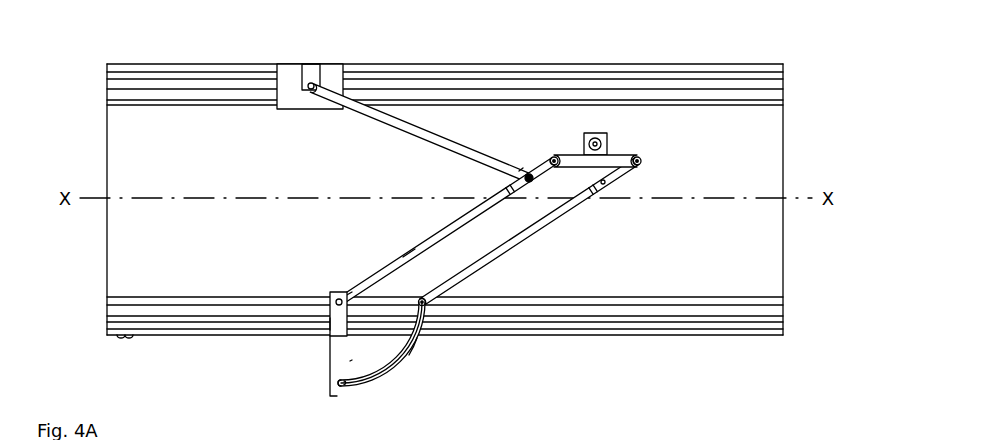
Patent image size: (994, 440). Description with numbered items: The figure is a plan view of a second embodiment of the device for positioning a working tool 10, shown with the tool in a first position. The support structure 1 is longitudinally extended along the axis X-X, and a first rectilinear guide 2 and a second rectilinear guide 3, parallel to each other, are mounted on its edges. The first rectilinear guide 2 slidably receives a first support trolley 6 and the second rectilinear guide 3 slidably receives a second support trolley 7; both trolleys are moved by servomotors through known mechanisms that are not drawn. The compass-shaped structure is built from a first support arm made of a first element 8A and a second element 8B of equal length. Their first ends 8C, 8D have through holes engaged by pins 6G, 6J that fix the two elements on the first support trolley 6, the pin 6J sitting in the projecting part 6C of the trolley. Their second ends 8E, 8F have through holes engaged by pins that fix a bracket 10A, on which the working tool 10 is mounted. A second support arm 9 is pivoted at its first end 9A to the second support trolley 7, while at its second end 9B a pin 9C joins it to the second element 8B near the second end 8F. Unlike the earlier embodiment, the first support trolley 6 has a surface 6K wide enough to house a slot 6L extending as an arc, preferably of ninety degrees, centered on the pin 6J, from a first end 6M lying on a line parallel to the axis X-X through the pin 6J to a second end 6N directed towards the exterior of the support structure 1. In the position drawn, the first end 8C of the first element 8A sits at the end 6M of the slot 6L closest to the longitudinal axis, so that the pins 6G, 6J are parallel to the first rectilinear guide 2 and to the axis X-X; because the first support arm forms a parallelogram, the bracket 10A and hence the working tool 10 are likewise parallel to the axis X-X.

The support structure 1 is at (768, 268).
The first rectilinear guide 2 is at (747, 315).
The second rectilinear guide 3 is at (765, 82).
The first support trolley 6 is at (316, 349).
The projecting part 6C is at (321, 323).
The pin 6G is at (425, 303).
The pin 6J is at (330, 302).
The surface 6K is at (350, 361).
The slot 6L is at (378, 372).
The first end of slot 6M is at (417, 338).
The second end of slot 6N is at (349, 383).
The second support trolley 7 is at (294, 83).
The first element 8A is at (492, 255).
The second element 8B is at (403, 255).
The first end of first element 8C is at (435, 291).
The first end of second element 8D is at (352, 293).
The second end of first element 8E is at (639, 166).
The second end of second element 8F is at (547, 158).
The second support arm 9 is at (393, 125).
The first end of second support arm 9A is at (325, 90).
The second end of second support arm 9B is at (527, 178).
The pin 9C is at (519, 171).
The working tool 10 is at (605, 133).
The bracket 10A is at (636, 156).